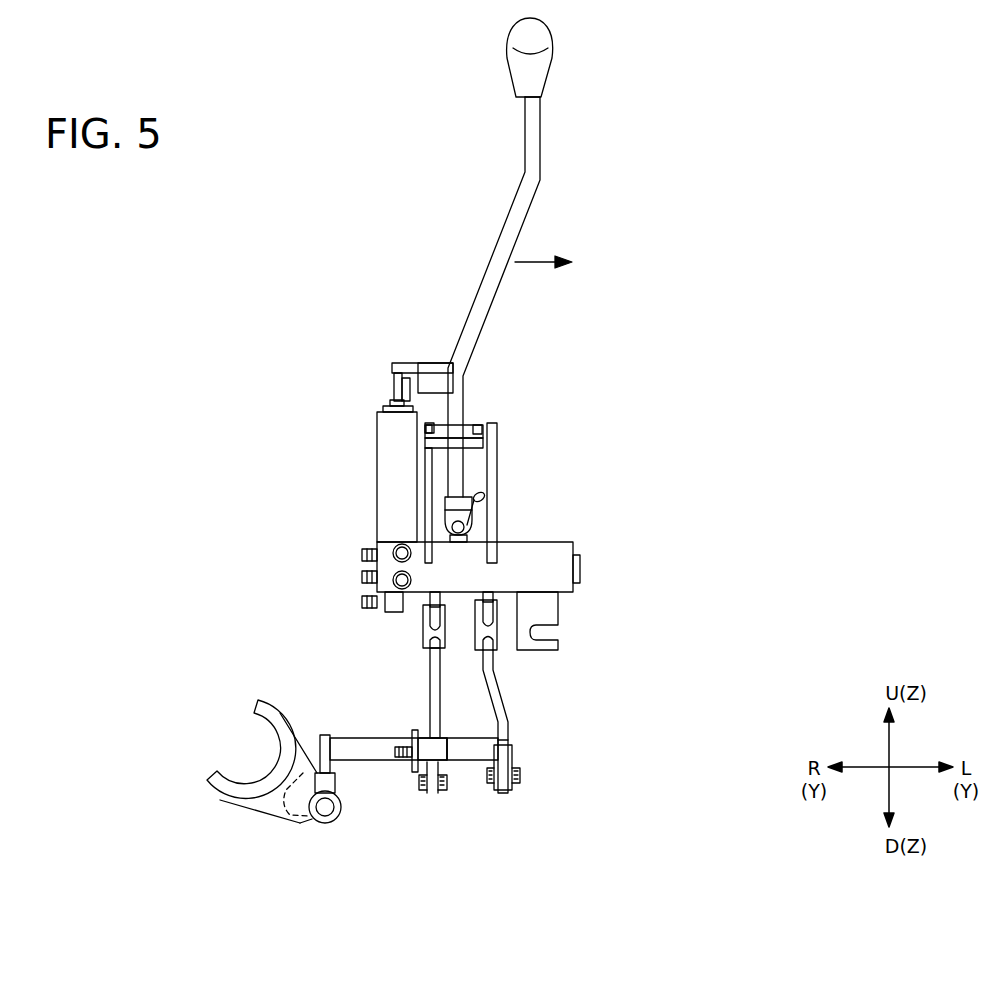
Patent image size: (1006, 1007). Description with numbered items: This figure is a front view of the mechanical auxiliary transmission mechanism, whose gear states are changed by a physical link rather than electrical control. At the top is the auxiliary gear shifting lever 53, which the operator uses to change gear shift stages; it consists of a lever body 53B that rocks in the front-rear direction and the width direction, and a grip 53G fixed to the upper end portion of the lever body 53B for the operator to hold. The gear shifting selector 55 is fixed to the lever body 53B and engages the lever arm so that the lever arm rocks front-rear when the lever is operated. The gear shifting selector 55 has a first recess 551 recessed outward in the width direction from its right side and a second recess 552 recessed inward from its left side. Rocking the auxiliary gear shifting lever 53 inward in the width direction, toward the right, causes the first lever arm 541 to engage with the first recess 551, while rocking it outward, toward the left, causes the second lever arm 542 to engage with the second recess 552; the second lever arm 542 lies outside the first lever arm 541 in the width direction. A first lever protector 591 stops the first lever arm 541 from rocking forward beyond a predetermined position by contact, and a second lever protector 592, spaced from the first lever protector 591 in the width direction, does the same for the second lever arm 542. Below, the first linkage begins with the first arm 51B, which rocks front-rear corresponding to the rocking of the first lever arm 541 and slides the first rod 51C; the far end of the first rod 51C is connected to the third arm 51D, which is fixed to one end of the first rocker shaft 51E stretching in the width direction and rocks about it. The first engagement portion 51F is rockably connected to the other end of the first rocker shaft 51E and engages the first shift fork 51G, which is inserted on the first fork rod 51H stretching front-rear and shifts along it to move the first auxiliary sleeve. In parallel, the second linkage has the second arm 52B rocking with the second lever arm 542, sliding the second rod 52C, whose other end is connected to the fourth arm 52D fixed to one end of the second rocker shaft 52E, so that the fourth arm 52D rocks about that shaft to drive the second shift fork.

The auxiliary gear shifting lever 53 is at (571, 280).
The grip 53G is at (537, 80).
The lever body 53B is at (540, 133).
The first recess 551 is at (434, 410).
The second recess 552 is at (485, 411).
The first lever arm 541 is at (425, 430).
The second lever arm 542 is at (497, 428).
The gear shifting selector 55 is at (470, 445).
The first lever protector 591 is at (430, 505).
The second lever protector 592 is at (497, 497).
The first arm 51B is at (430, 600).
The first rod 51C is at (433, 690).
The third arm 51D is at (433, 785).
The first rocker shaft 51E is at (370, 760).
The first engagement portion 51F is at (322, 735).
The first shift fork 51G is at (270, 700).
The first fork rod 51H is at (325, 812).
The second arm 52B is at (490, 610).
The second rod 52C is at (495, 698).
The fourth arm 52D is at (503, 785).
The second rocker shaft 52E is at (478, 750).